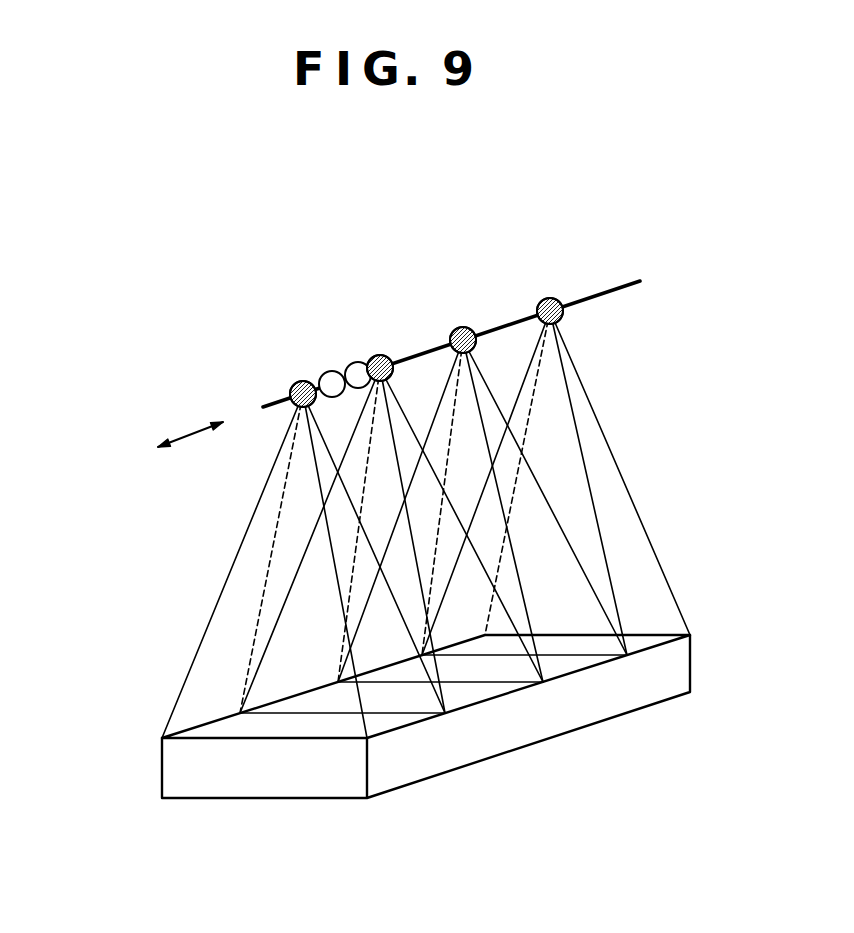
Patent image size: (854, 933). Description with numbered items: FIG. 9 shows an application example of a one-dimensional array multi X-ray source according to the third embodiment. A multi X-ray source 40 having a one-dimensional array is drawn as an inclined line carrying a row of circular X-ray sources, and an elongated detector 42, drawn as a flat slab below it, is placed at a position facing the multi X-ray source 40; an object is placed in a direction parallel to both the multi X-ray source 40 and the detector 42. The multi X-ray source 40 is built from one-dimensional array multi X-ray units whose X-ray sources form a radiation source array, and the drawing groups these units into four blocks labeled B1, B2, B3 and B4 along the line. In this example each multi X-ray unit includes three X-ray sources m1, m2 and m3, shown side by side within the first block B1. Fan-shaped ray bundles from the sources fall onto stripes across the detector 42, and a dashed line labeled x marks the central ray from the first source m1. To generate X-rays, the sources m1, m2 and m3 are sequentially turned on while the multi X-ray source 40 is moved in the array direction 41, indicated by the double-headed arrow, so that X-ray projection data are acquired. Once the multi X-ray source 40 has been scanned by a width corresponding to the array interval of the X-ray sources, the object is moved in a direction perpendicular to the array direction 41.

The multi X-ray source 40 is at (607, 297).
The array direction 41 is at (188, 433).
The detector 42 is at (183, 767).
The optical axis of light beam x is at (262, 602).
The X-ray source m1 is at (291, 386).
The X-ray source m2 is at (321, 378).
The X-ray source m3 is at (329, 352).
The first light source block B1 is at (284, 346).
The second light source block B2 is at (407, 267).
The third light source block B3 is at (518, 232).
The fourth light source block B4 is at (628, 200).